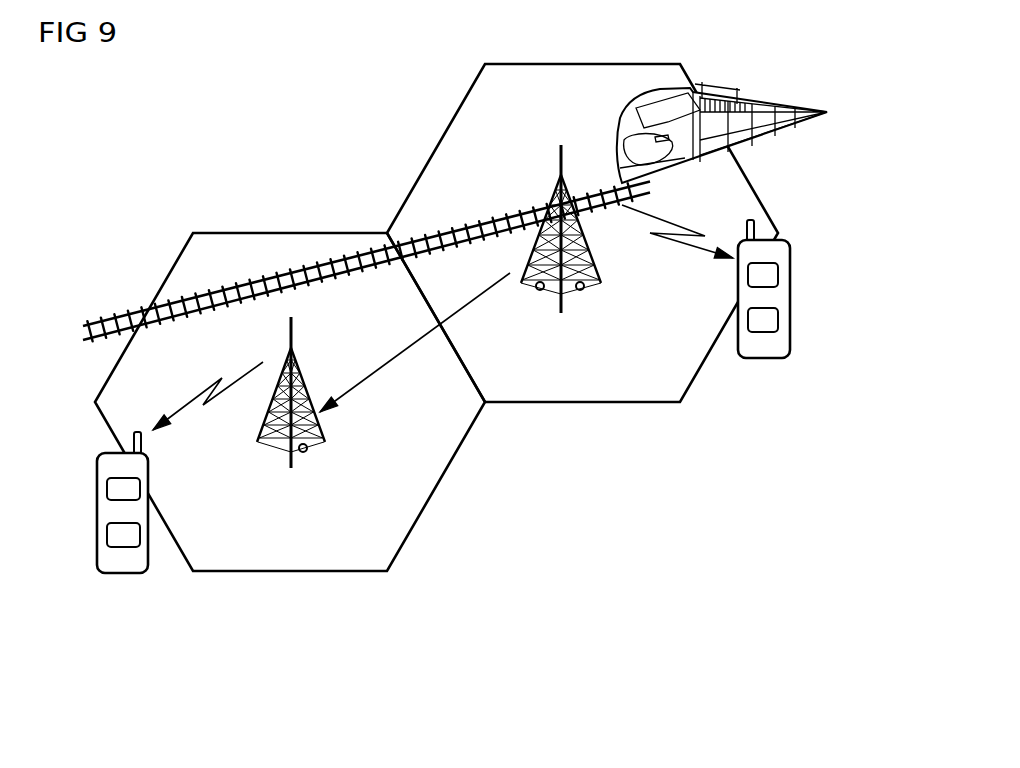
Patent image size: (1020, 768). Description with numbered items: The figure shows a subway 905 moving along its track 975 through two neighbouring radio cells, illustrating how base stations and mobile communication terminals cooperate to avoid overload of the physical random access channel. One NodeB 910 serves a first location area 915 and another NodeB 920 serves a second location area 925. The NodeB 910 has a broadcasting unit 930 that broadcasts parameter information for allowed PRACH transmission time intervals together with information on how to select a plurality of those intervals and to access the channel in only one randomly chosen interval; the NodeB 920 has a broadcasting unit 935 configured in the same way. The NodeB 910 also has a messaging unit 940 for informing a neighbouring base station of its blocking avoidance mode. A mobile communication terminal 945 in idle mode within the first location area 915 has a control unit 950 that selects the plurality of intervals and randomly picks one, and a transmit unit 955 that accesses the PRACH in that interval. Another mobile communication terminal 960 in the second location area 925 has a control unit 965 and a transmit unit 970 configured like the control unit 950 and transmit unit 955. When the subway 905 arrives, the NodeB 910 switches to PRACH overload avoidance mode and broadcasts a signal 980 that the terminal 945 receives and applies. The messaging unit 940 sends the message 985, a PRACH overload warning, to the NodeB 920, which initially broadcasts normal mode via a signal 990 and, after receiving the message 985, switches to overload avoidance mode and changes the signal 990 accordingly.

The subway 905 is at (750, 100).
The NodeB 910 is at (558, 152).
The first location area 915 is at (582, 64).
The NodeB 920 is at (293, 320).
The second location area 925 is at (292, 233).
The broadcasting unit 930 is at (580, 291).
The broadcasting unit 935 is at (306, 452).
The messaging unit 940 is at (538, 291).
The mobile communication terminal 945 is at (763, 359).
The control unit 950 is at (791, 321).
The transmit unit 955 is at (791, 276).
The mobile communication terminal 960 is at (127, 574).
The control unit 965 is at (108, 537).
The transmit unit 970 is at (108, 491).
The track 975 is at (105, 333).
The signal 980 is at (690, 232).
The message 985 is at (413, 387).
The signal 990 is at (235, 378).